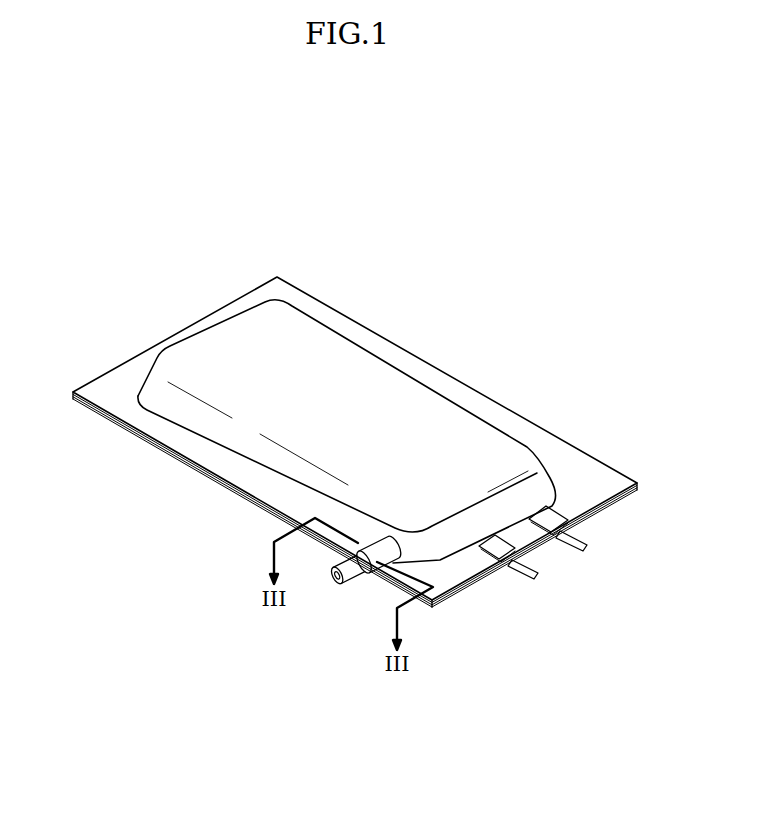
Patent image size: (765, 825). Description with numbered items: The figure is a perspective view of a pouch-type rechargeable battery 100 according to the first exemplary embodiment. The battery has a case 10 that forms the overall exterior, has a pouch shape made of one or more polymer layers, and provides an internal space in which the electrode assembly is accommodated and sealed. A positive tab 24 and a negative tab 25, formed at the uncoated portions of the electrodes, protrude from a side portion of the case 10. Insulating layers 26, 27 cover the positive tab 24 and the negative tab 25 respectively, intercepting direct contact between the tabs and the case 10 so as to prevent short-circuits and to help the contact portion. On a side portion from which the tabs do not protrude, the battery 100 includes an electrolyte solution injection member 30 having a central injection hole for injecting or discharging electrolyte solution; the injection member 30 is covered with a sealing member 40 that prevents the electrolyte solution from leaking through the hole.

The pouch-type rechargeable battery 100 is at (353, 148).
The case 10 is at (494, 410).
The positive tab 24 is at (588, 548).
The negative tab 25 is at (538, 577).
The insulating layer 26 is at (565, 531).
The insulating layer 27 is at (508, 563).
The electrolyte solution injection member 30 is at (363, 570).
The sealing member 40 is at (332, 588).